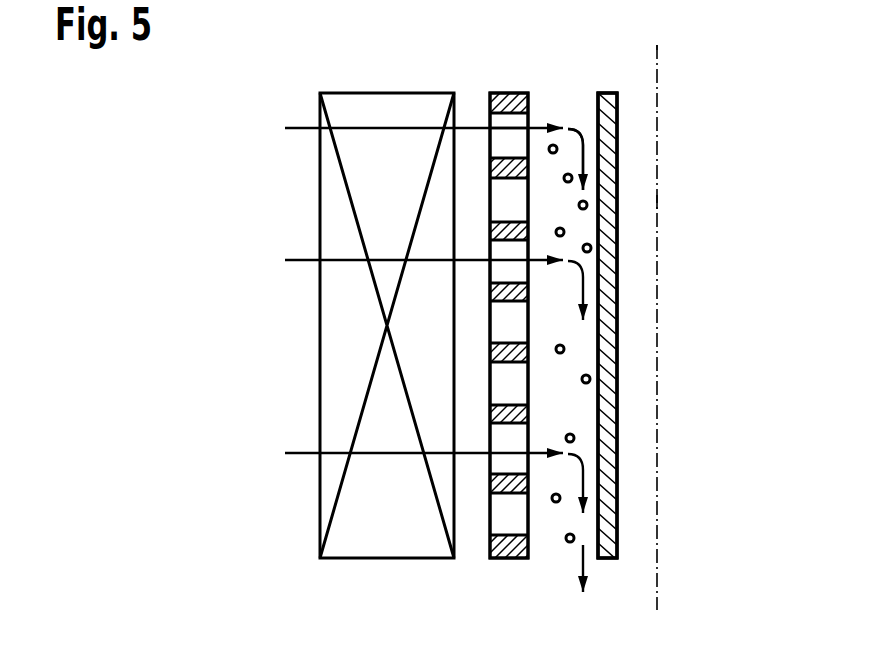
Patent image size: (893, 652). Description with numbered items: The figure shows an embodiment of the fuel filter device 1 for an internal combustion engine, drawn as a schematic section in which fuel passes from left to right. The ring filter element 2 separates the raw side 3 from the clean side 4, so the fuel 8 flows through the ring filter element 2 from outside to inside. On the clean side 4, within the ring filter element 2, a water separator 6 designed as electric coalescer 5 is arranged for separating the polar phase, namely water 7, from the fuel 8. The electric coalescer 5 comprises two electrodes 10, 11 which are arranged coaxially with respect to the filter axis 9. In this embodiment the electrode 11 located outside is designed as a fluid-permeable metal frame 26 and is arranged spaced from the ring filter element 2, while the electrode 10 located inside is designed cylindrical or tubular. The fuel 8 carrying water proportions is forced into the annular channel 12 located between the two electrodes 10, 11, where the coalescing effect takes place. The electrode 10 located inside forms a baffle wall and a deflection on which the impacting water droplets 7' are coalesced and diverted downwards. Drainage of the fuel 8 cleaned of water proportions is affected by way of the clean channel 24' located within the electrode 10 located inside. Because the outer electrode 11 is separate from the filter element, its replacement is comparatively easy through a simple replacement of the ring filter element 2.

The fuel filter device 1 is at (753, 85).
The ring filter element 2 is at (345, 322).
The raw side 3 is at (278, 280).
The clean side 4 is at (483, 177).
The electric coalescer 5 is at (618, 315).
The water separator 6 is at (618, 315).
The water 7 is at (558, 383).
The water droplets 7' is at (653, 455).
The fuel 8 is at (295, 455).
The filter axis 9 is at (658, 602).
The electrode located inside 10 is at (607, 93).
The electrode located outside 11 is at (500, 93).
The annular channel 12 is at (592, 156).
The clean channel 24' is at (700, 207).
The fluid-permeable metal frame 26 is at (500, 93).